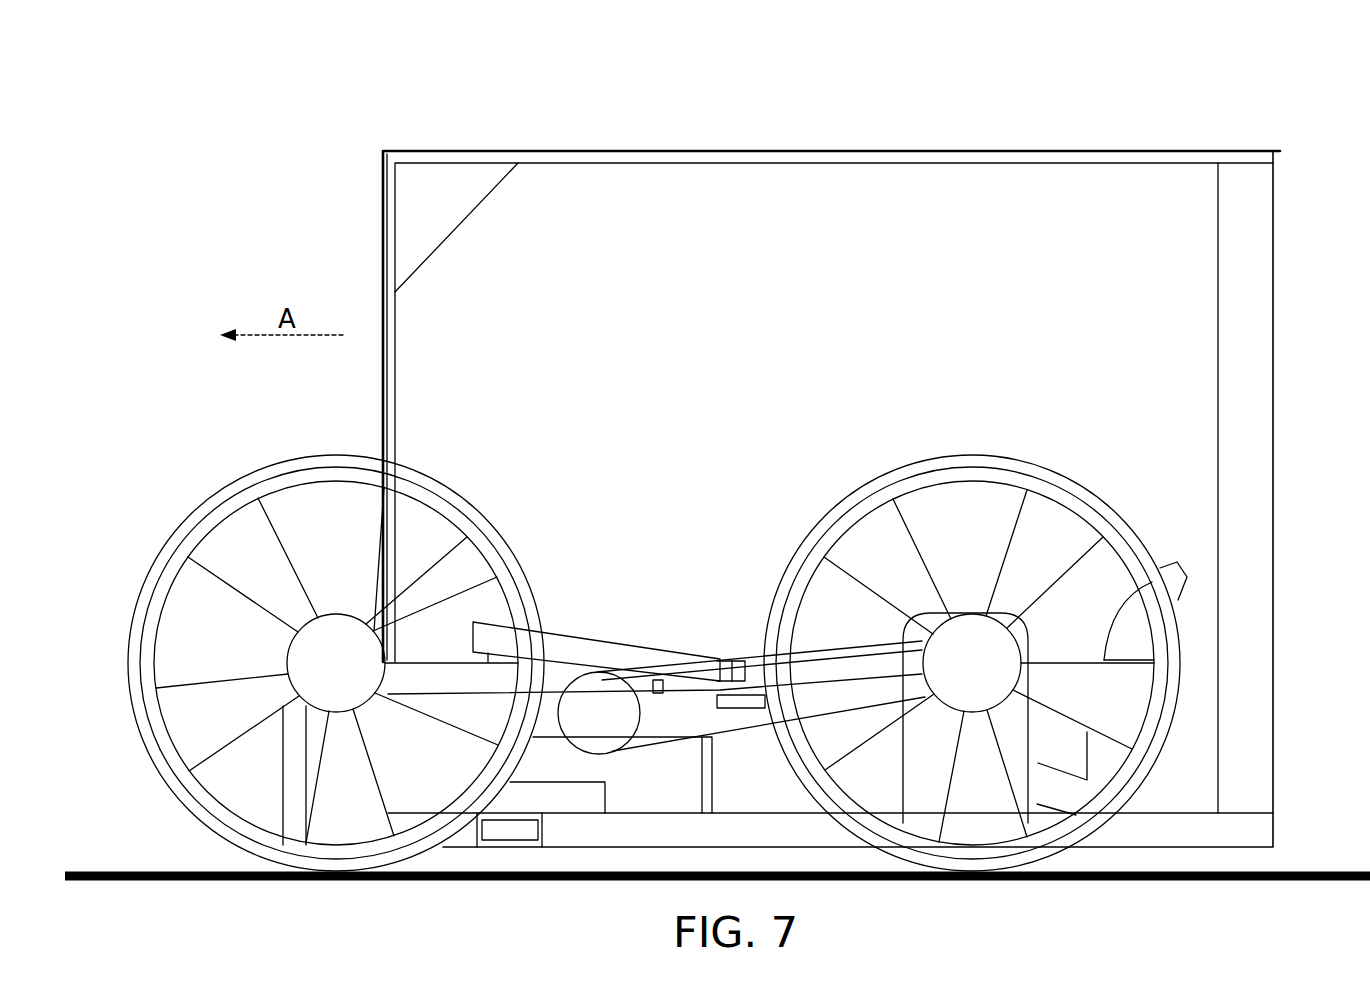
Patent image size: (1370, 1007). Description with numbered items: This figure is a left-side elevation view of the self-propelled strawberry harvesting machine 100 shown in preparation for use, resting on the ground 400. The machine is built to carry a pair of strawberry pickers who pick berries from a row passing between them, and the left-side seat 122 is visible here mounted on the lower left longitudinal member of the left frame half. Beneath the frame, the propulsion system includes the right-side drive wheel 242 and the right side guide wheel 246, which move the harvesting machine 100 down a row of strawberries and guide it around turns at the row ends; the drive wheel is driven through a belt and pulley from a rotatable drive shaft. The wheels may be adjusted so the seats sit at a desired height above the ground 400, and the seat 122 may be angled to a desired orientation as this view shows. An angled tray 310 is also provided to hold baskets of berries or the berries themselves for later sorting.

The harvesting machine 100 is at (332, 73).
The left-side seat 122 is at (1137, 633).
The right-side drive wheel 242 is at (1053, 858).
The right side guide wheel 246 is at (178, 788).
The angled tray 310 is at (582, 650).
The ground 400 is at (187, 872).